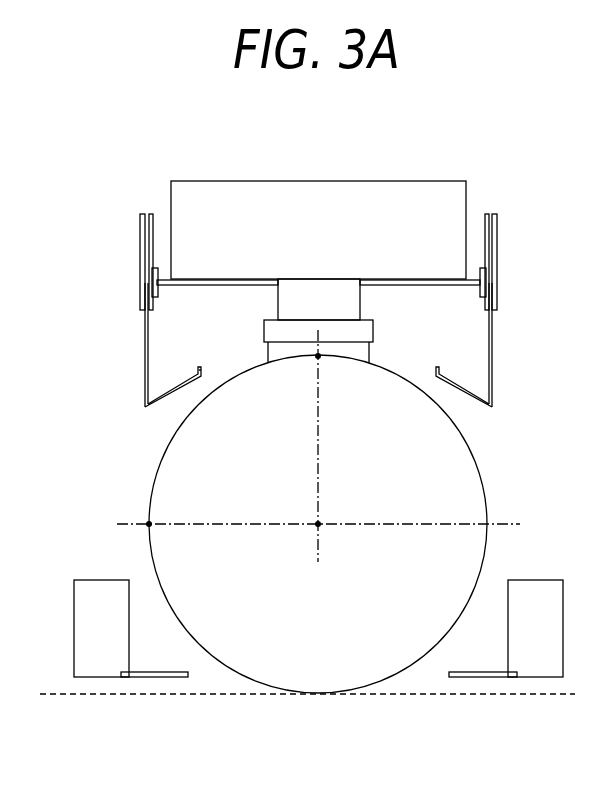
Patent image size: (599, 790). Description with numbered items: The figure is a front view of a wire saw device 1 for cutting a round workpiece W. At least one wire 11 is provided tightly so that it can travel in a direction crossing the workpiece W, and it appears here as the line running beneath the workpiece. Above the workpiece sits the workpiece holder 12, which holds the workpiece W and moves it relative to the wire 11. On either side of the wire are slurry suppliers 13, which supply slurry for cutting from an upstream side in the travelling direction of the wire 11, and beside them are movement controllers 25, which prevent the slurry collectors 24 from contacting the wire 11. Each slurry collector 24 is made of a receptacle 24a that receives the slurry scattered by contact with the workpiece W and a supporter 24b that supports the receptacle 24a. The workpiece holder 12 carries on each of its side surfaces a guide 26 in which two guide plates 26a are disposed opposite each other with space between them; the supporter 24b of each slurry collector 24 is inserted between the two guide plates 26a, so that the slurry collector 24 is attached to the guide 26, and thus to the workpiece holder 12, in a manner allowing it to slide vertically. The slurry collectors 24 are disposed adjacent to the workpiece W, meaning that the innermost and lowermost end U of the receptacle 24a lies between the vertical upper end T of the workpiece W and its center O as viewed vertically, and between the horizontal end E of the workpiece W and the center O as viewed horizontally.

The wire saw device 1 is at (428, 160).
The workpiece holder 12 is at (327, 182).
The slurry supplier 13 is at (101, 586).
The slurry collector 24 is at (136, 344).
The receptacle 24a is at (172, 392).
The supporter 24b is at (143, 361).
The movement controller 25 is at (156, 670).
The guide 26 is at (134, 257).
The guide plate 26a is at (151, 214).
The wire 11 is at (487, 694).
The workpiece W is at (466, 493).
The vertical upper end of the workpiece T is at (323, 364).
The center of the workpiece O is at (318, 446).
The horizontal end of the workpiece E is at (156, 537).
The end of the receptacle U is at (202, 373).